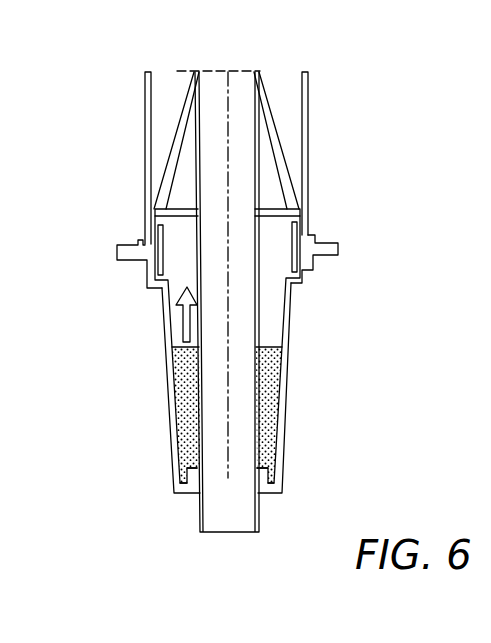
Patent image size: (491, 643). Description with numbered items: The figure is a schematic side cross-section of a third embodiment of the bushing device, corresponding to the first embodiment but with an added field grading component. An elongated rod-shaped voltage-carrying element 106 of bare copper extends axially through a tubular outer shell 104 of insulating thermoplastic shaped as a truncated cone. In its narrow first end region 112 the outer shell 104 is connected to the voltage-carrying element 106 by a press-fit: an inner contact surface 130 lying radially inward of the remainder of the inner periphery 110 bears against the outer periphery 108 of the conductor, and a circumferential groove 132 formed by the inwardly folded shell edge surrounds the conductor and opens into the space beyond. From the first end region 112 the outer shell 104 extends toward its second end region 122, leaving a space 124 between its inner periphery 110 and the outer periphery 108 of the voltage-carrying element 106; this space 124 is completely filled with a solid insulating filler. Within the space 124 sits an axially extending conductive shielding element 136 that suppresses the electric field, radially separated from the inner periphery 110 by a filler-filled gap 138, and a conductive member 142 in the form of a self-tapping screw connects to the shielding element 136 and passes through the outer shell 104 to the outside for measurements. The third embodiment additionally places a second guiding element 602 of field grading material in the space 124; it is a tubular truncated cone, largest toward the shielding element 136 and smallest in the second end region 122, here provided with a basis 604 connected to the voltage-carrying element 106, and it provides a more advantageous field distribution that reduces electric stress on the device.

The outer shell 104 is at (307, 128).
The voltage-carrying element 106 is at (213, 108).
The outer periphery 108 is at (197, 150).
The inner periphery 110 is at (290, 174).
The first end region 112 is at (310, 487).
The second end region 122 is at (128, 78).
The space 124 is at (184, 244).
The inner contact surface 130 is at (201, 470).
The circumferential groove 132 is at (272, 496).
The shielding element 136 is at (162, 225).
The gap 138 is at (151, 270).
The conductive member 142 is at (307, 268).
The second guiding element 602 is at (267, 108).
The basis 604 is at (272, 212).